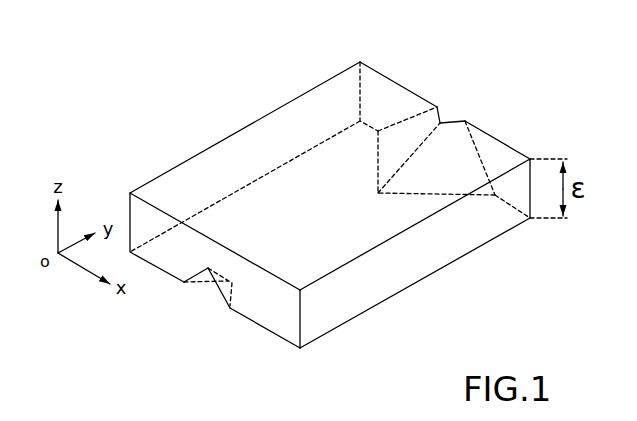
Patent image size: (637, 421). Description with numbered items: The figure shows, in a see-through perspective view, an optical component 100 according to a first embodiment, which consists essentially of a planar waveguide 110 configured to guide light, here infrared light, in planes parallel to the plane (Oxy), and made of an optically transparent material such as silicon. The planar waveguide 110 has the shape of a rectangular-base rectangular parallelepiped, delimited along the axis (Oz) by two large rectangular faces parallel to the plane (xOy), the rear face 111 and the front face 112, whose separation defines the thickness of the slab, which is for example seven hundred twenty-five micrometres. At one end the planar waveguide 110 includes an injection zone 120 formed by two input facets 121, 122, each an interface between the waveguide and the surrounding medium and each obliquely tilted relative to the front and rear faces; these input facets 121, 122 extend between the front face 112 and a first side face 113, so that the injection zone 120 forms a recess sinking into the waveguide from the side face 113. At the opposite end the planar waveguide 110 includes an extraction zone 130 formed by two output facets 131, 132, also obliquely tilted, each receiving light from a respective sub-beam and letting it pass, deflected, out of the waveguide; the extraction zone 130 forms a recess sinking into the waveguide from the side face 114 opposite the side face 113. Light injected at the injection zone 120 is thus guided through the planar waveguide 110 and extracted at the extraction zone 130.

The optical component 100 is at (207, 108).
The planar waveguide 110 is at (422, 260).
The rear face 111 is at (320, 267).
The front face 112 is at (395, 297).
The first side face 113 is at (287, 323).
The side face 114 is at (372, 93).
The injection zone 120 is at (210, 300).
The input facet 121 is at (200, 282).
The input facet 122 is at (233, 288).
The extraction zone 130 is at (452, 110).
The output facet 131 is at (410, 128).
The output facet 132 is at (460, 150).